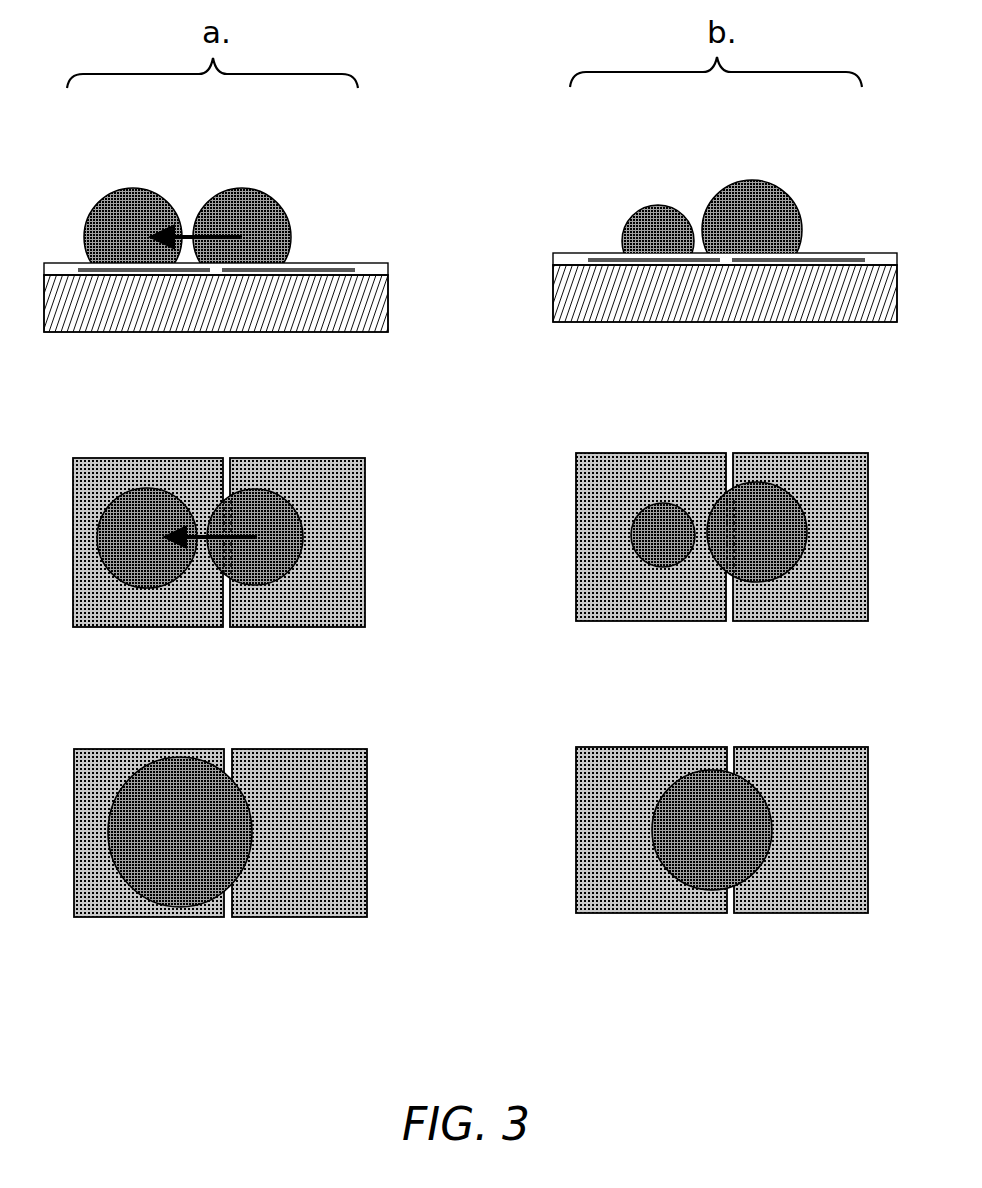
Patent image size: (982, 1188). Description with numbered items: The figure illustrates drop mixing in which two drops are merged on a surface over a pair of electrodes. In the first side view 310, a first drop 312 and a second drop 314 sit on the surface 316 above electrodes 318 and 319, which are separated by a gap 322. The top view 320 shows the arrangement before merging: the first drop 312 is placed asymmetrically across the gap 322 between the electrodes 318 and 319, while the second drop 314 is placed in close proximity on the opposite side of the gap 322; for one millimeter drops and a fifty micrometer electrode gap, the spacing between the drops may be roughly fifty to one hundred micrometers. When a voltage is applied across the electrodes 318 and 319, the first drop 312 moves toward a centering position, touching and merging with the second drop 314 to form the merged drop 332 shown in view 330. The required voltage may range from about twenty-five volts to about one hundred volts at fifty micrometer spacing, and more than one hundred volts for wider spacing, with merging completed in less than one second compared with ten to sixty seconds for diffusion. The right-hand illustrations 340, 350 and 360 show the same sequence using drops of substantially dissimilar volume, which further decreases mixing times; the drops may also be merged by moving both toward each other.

The substrate with two droplets before merging (side view) 310 is at (247, 221).
The first drop 312 is at (237, 190).
The second drop 314 is at (128, 190).
The surface 316 is at (363, 263).
The electrode 318 is at (310, 267).
The electrode 319 is at (85, 267).
The droplets on electrodes with applied force (top view) 320 is at (264, 538).
The gap 322 is at (223, 625).
The merged droplet on electrodes (top view) 330 is at (250, 801).
The merged drop 332 is at (143, 767).
The illustration 340 is at (793, 185).
The illustration 350 is at (783, 447).
The illustration 360 is at (778, 742).